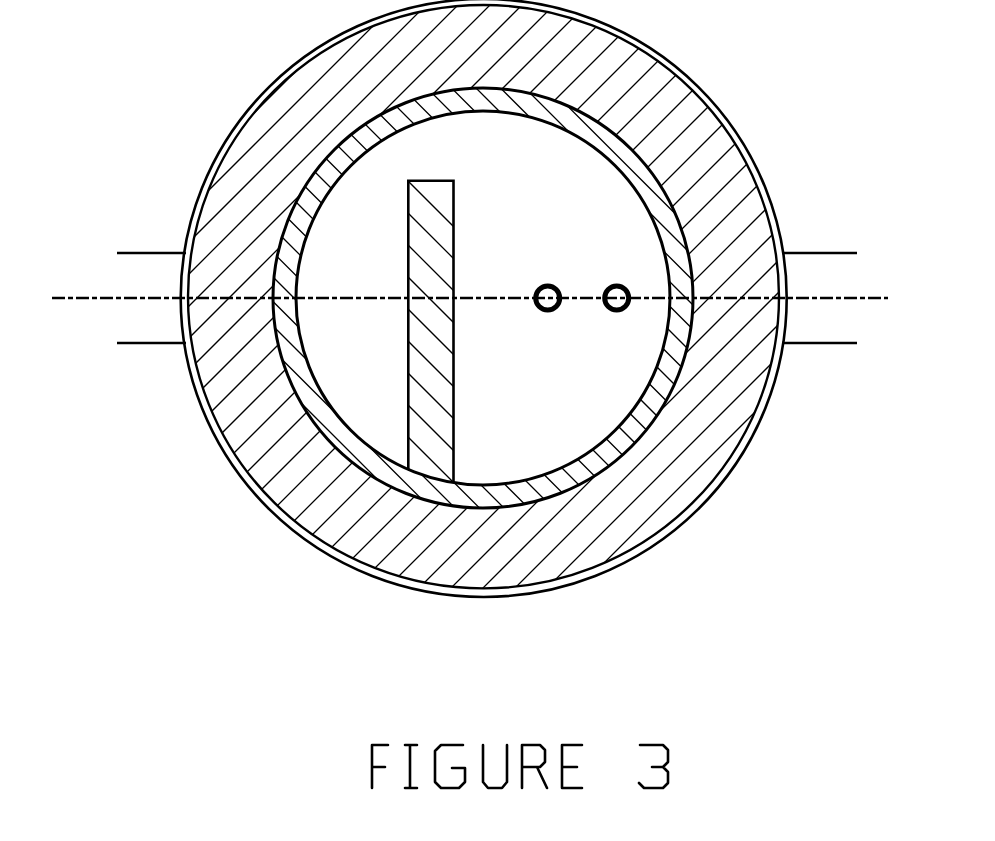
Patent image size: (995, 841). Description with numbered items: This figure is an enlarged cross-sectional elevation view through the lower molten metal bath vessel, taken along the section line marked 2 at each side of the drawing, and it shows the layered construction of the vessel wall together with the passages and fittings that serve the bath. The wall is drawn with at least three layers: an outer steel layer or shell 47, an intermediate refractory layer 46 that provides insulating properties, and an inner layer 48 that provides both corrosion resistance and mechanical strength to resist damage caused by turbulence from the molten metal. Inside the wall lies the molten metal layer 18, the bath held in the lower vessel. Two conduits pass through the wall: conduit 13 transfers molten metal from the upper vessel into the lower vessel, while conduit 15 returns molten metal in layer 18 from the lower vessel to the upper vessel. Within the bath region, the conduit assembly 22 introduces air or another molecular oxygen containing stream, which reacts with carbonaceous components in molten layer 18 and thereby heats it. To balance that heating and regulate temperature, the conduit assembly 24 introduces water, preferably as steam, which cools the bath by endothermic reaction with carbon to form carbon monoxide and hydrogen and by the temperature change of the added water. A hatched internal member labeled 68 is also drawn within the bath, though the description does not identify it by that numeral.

The section line 2- 2 is at (472, 297).
The conduit 13 is at (818, 350).
The conduit 15 is at (148, 347).
The molten metal layer 18 is at (483, 298).
The conduit assembly 22 is at (627, 288).
The conduit assembly 24 is at (558, 288).
The intermediate refractory layer 46 is at (445, 537).
The outer steel layer or shell 47 is at (357, 577).
The inner layer 48 is at (527, 492).
The baffle 68 is at (455, 217).